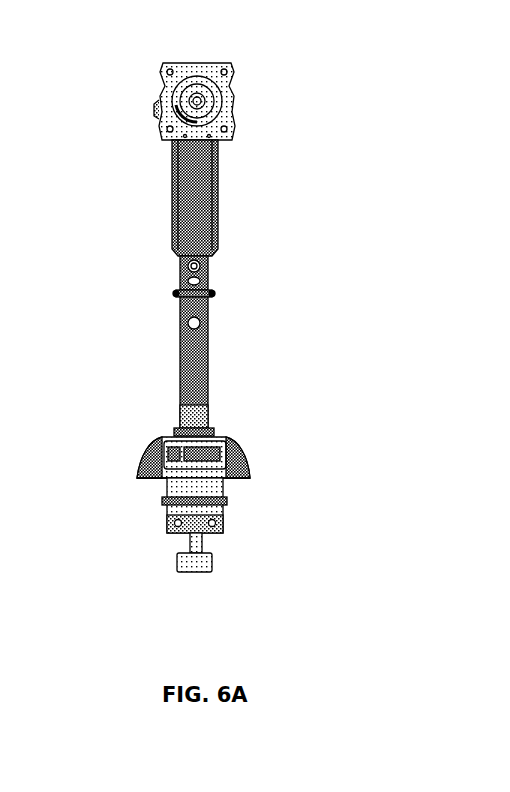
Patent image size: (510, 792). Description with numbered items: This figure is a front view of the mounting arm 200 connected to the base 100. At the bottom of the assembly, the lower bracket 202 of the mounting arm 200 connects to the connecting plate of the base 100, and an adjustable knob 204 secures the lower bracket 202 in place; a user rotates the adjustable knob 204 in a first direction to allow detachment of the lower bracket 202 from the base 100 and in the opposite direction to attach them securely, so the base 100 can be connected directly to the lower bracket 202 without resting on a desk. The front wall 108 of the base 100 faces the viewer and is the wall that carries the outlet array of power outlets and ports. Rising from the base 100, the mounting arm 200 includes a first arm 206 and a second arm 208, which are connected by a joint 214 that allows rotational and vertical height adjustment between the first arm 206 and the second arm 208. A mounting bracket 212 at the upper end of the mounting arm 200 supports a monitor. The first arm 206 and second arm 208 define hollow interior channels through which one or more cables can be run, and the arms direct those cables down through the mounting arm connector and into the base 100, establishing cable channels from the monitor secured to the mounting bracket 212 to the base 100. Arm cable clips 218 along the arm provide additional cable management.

The base 100 is at (267, 437).
The front wall 108 is at (158, 481).
The mounting arm 200 is at (270, 193).
The lower bracket 202 is at (224, 495).
The adjustable knob 204 is at (192, 571).
The first arm 206 is at (210, 362).
The second arm 208 is at (174, 195).
The mounting bracket 212 is at (234, 109).
The joint connector 214 is at (182, 274).
The arm cable clips 218 is at (206, 290).